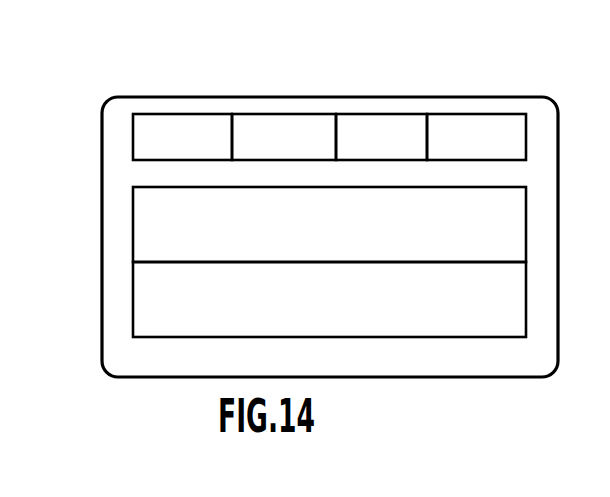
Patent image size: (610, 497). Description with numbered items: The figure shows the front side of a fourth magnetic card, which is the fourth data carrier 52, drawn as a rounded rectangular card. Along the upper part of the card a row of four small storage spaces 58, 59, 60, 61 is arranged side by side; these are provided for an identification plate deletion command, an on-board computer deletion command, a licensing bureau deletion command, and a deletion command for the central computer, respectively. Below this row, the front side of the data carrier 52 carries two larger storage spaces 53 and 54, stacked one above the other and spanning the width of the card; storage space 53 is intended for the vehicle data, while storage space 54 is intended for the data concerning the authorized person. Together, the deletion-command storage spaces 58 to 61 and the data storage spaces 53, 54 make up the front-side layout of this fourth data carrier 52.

The fourth data carrier 52 is at (98, 103).
The storage space for vehicle data 53 is at (150, 215).
The storage space for authorized person data 54 is at (150, 293).
The storage space for identification plate deletion command 58 is at (193, 135).
The storage space for on-board computer deletion command 59 is at (290, 130).
The storage space for licensing bureau deletion command 60 is at (375, 130).
The storage space for central computer deletion command 61 is at (471, 135).